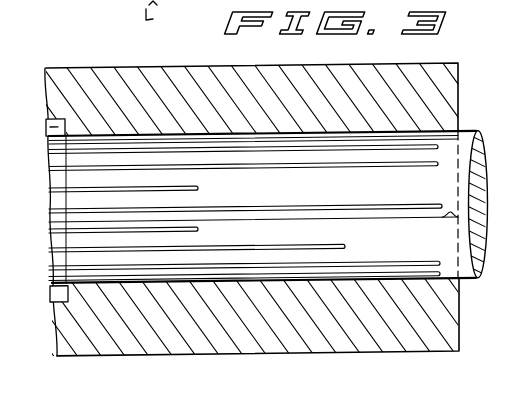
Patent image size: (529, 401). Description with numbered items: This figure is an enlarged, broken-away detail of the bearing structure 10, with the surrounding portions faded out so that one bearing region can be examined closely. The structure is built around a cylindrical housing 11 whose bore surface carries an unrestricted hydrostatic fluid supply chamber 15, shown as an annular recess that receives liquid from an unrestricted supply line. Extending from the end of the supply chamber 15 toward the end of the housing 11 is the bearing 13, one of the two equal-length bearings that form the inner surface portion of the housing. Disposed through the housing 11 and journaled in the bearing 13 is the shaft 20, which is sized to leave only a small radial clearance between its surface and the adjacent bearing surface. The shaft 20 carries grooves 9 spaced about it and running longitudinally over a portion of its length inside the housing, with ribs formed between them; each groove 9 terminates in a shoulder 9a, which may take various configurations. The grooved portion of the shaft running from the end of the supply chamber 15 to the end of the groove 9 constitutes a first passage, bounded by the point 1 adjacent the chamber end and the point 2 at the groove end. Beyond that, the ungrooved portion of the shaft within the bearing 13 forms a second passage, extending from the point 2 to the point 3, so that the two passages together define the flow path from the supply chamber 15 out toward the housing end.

The bearing structure 10 is at (96, 58).
The cylindrical housing 11 is at (400, 358).
The bearing 13 is at (395, 139).
The hydrostatic fluid supply chamber 15 is at (50, 303).
The shaft 20 is at (268, 207).
The groove 9 is at (238, 192).
The shoulder 9a is at (446, 213).
The first passage point 1 is at (63, 212).
The groove end point 2 is at (455, 220).
The second passage end point 3 is at (470, 278).